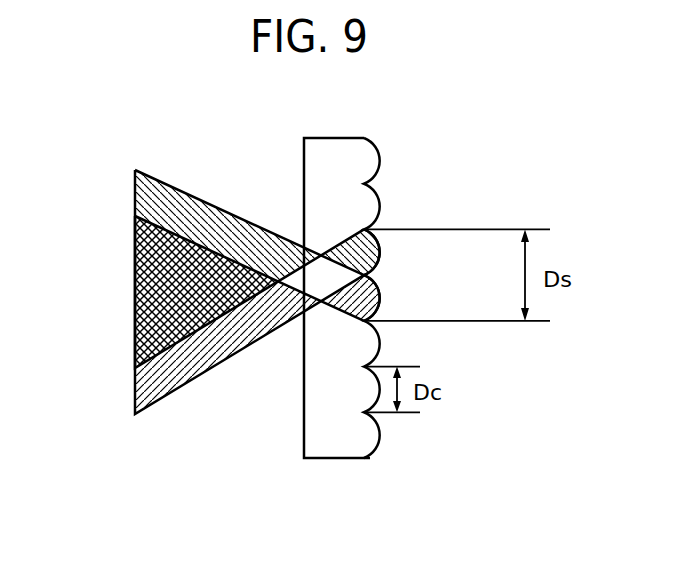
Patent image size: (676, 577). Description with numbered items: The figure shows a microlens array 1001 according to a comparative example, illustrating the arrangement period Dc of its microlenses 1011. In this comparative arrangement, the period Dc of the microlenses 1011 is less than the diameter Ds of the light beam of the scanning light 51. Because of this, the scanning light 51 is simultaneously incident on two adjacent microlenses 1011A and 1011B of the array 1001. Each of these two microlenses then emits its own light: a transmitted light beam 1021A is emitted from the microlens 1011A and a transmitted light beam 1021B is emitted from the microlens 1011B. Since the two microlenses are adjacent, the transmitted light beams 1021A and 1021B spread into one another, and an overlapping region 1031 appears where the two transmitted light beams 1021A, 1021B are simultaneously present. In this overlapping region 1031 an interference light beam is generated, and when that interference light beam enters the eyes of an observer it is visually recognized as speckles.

The microlens array 1001 is at (339, 138).
The microlenses 1011 is at (379, 197).
The microlens 1011A is at (381, 253).
The microlens 1011B is at (381, 298).
The transmitted light beam 1021A is at (197, 197).
The transmitted light beam 1021B is at (198, 377).
The overlapping region 1031 is at (145, 290).
The scanning light 51 is at (513, 228).